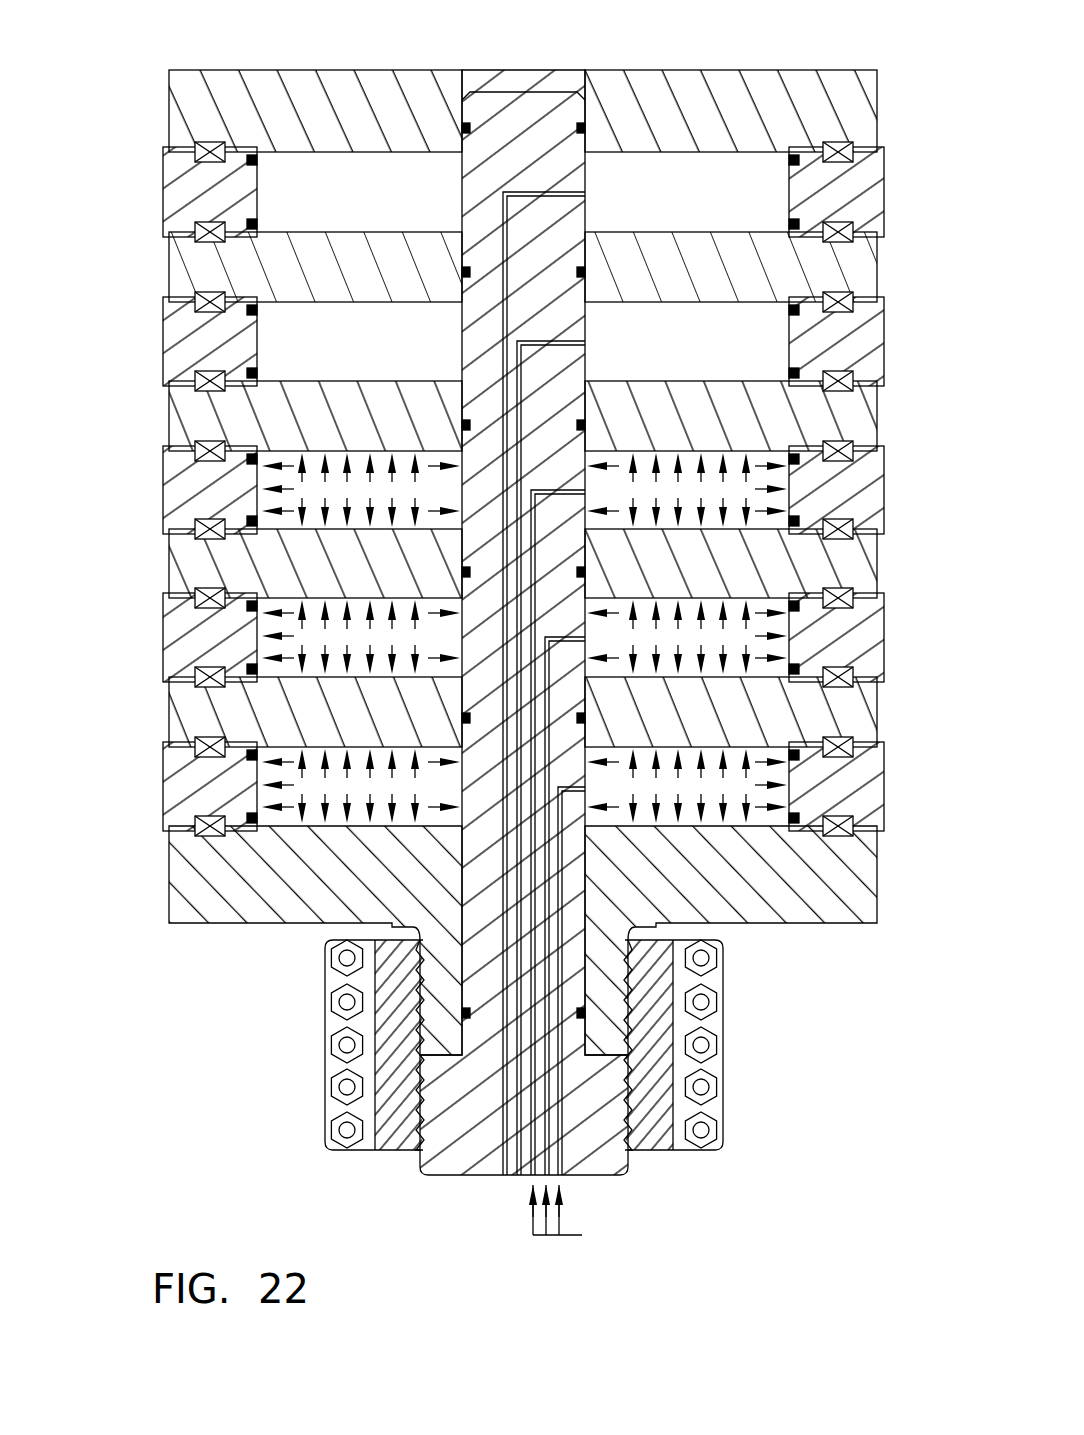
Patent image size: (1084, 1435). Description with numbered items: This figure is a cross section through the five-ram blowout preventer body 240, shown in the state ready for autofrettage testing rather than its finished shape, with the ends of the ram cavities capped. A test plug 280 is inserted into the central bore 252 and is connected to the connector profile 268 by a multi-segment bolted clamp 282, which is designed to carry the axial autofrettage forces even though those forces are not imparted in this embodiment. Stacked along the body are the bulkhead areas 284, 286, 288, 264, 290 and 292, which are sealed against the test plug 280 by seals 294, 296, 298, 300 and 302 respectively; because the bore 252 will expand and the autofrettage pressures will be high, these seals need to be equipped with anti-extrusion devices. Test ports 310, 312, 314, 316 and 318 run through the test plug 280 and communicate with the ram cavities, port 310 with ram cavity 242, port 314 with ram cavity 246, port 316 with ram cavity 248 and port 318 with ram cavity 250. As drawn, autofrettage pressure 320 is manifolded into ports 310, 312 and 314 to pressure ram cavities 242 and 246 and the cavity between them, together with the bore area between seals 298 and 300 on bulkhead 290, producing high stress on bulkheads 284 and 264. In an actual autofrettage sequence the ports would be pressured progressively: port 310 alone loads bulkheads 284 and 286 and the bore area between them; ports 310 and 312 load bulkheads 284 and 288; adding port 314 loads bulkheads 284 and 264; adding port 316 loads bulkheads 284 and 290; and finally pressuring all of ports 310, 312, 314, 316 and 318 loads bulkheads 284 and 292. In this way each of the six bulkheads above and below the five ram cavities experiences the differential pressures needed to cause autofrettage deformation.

The blowout preventer body 240 is at (501, 530).
The ram cavity 242 is at (760, 785).
The ram cavity 246 is at (760, 482).
The ram cavity 248 is at (760, 340).
The ram cavity 250 is at (760, 188).
The bore 252 is at (473, 70).
The bulkhead area 264 is at (760, 420).
The connector profile 268 is at (423, 972).
The test plug 280 is at (627, 661).
The multi-segment bolted clamp 282 is at (400, 1072).
The bulkhead area 284 is at (760, 630).
The bulkhead area 286 is at (760, 718).
The bulkhead area 288 is at (760, 567).
The bulkhead area 290 is at (760, 272).
The bulkhead area 292 is at (760, 125).
The seal 294 is at (462, 718).
The seal 296 is at (462, 572).
The seal 298 is at (462, 425).
The seal 300 is at (462, 272).
The seal 302 is at (462, 128).
The test port 310 is at (505, 1143).
The test port 312 is at (519, 1146).
The test port 314 is at (533, 1148).
The test port 316 is at (547, 1150).
The test port 318 is at (560, 1152).
The autofrettage pressure 320 is at (551, 1236).